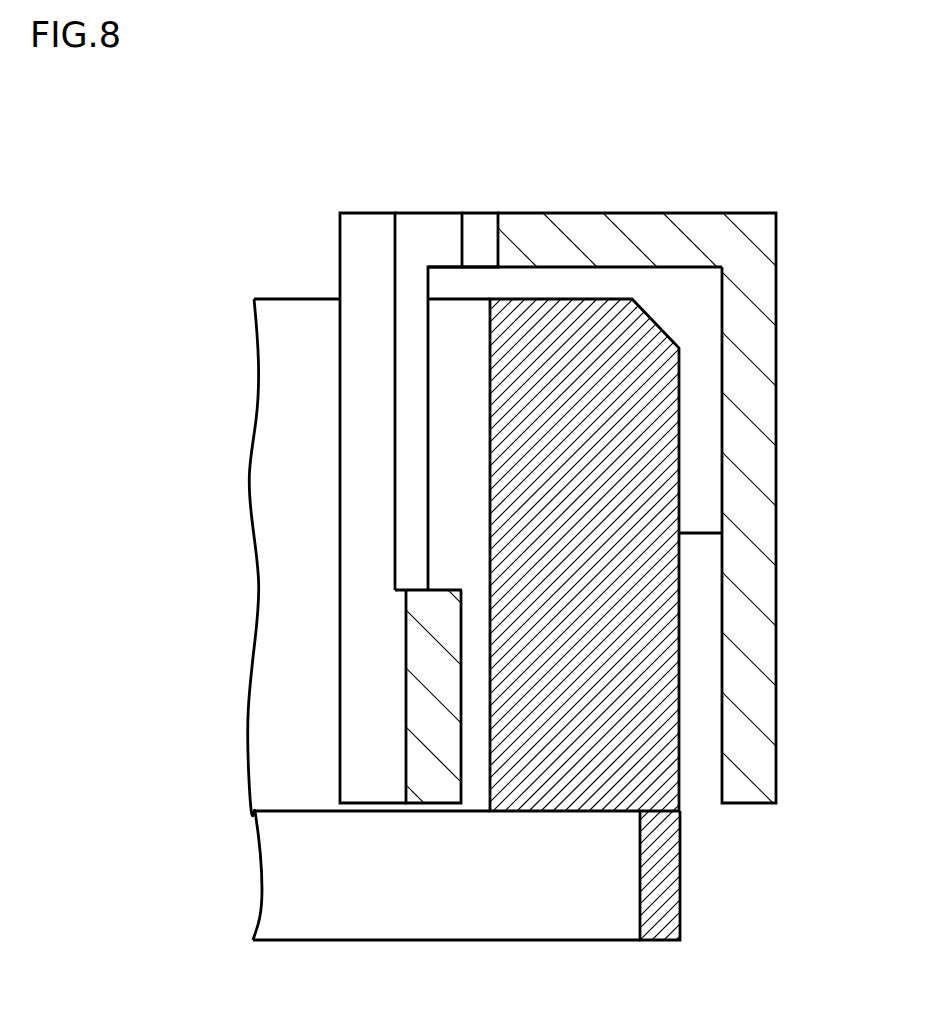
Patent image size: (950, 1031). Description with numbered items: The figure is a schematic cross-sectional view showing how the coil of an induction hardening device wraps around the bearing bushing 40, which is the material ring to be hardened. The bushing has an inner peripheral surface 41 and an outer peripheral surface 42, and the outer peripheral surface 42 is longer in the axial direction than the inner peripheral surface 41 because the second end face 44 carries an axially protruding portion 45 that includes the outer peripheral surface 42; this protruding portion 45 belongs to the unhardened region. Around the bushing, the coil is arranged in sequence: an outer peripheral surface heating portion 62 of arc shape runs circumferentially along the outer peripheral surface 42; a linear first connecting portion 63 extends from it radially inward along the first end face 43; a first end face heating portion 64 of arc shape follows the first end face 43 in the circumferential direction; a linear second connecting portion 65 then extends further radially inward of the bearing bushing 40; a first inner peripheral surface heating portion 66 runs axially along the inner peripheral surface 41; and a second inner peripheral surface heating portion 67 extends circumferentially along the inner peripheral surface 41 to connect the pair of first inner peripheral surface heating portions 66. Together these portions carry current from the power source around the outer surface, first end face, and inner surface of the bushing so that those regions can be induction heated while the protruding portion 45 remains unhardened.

The bearing bushing 40 is at (475, 578).
The inner peripheral surface 41 is at (488, 507).
The outer peripheral surface 42 is at (679, 507).
The first end face 43 is at (553, 298).
The second end face 44 is at (545, 812).
The protruding portion 45 is at (658, 895).
The outer peripheral surface heating portion 62 is at (750, 580).
The first connecting portion 63 is at (712, 240).
The first end face heating portion 64 is at (483, 240).
The second connecting portion 65 is at (423, 240).
The first inner peripheral surface heating portion 66 is at (366, 406).
The second inner peripheral surface heating portion 67 is at (437, 780).